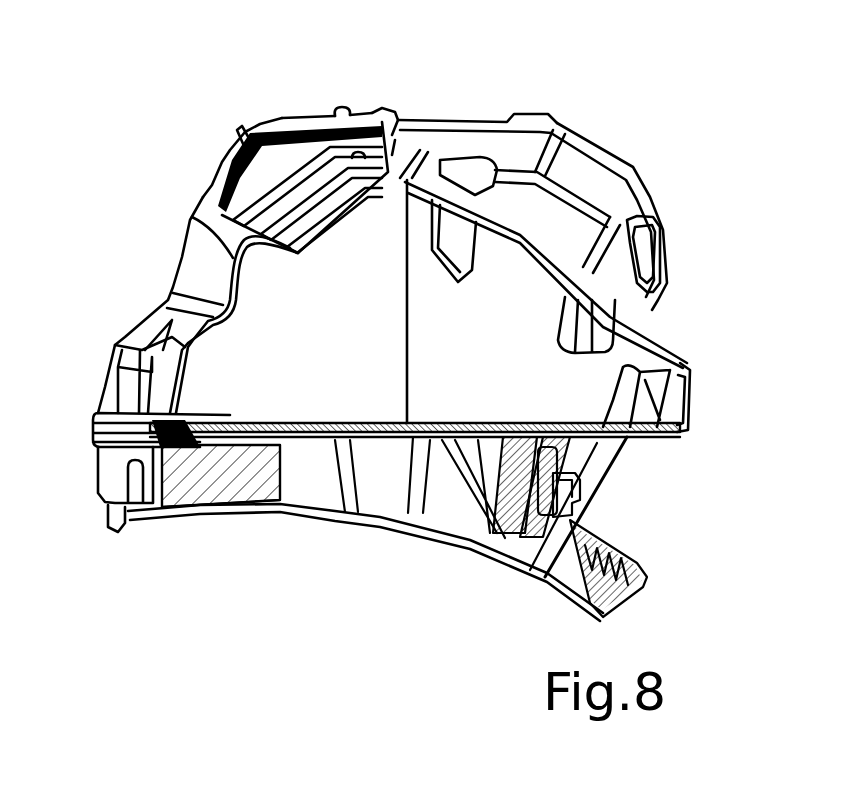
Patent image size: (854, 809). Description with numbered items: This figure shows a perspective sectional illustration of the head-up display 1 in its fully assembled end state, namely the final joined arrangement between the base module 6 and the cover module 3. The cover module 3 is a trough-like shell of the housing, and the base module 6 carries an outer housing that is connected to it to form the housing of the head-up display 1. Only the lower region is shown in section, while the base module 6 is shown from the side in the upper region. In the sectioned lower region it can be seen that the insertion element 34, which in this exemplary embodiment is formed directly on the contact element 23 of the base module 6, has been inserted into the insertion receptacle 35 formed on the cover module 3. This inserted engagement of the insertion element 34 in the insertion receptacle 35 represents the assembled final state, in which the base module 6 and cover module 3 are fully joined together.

The head-up display 1 is at (682, 216).
The cover module 3 is at (120, 544).
The base module 6 is at (577, 131).
The contact element 23 is at (510, 560).
The insertion element 34 is at (572, 447).
The insertion receptacle 35 is at (563, 495).